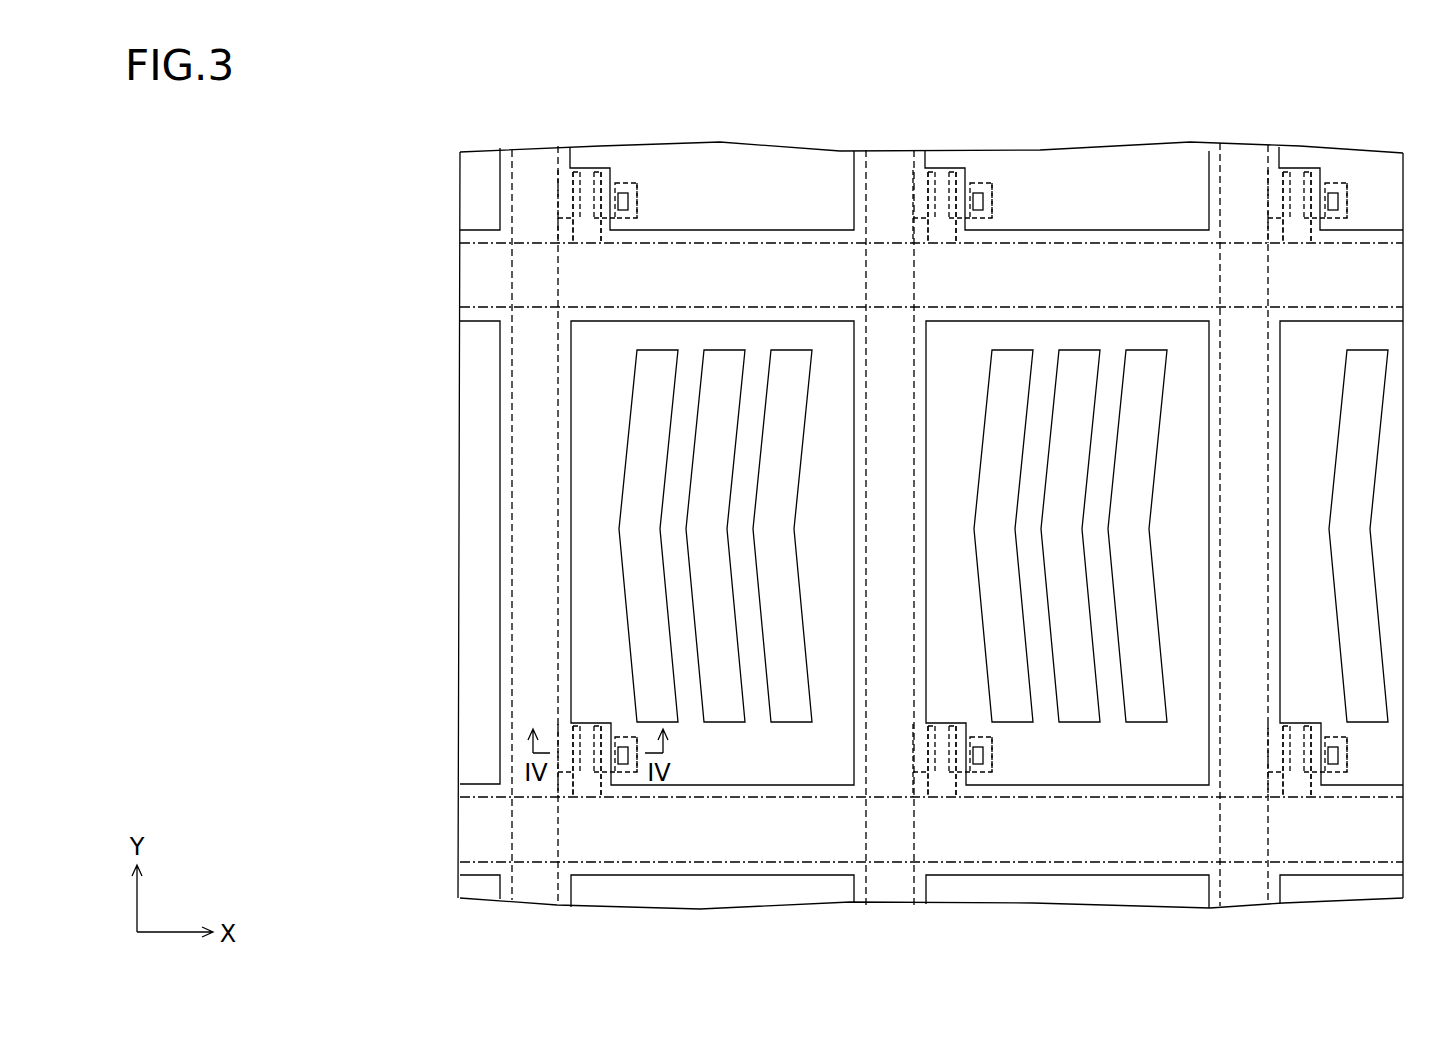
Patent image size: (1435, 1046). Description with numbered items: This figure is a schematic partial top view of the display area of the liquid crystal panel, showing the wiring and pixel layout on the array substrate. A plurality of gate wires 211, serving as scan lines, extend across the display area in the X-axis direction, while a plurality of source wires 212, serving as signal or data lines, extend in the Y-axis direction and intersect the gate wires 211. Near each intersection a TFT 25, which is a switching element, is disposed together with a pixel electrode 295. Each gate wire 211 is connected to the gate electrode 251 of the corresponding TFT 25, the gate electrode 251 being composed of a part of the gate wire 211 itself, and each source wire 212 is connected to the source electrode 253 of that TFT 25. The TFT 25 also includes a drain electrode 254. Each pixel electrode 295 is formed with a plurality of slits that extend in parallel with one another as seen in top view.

The TFT 25 is at (585, 168).
The gate wire 211 is at (492, 320).
The source wire 212 is at (508, 480).
The gate electrode 251 is at (597, 172).
The source electrode 253 is at (540, 150).
The drain electrode 254 is at (604, 165).
The pixel electrode 295 is at (741, 340).